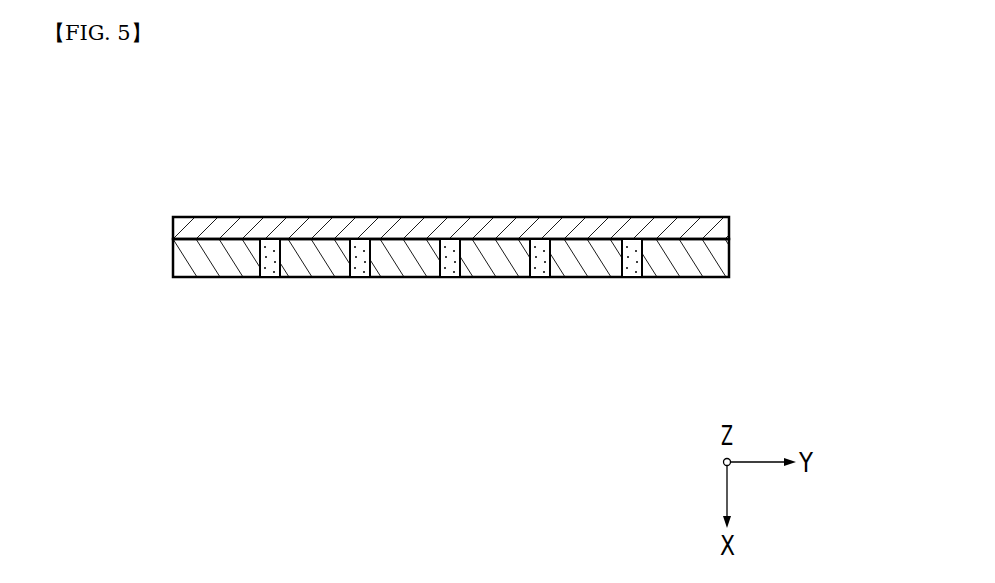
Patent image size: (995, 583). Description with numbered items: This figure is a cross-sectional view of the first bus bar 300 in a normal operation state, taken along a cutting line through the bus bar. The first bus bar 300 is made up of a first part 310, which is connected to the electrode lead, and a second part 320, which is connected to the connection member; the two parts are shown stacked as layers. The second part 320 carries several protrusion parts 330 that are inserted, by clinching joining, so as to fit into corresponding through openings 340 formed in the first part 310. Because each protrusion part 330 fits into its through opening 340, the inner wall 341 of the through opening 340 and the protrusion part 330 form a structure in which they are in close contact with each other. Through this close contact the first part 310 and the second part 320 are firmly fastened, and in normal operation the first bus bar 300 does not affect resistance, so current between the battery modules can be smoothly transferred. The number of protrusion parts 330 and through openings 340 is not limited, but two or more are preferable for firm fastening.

The first bus bar 300 is at (498, 236).
The first part 310 is at (721, 262).
The second part 320 is at (721, 225).
The protrusion part 330 is at (627, 245).
The through opening 340 is at (626, 288).
The inner wall 341 is at (280, 255).